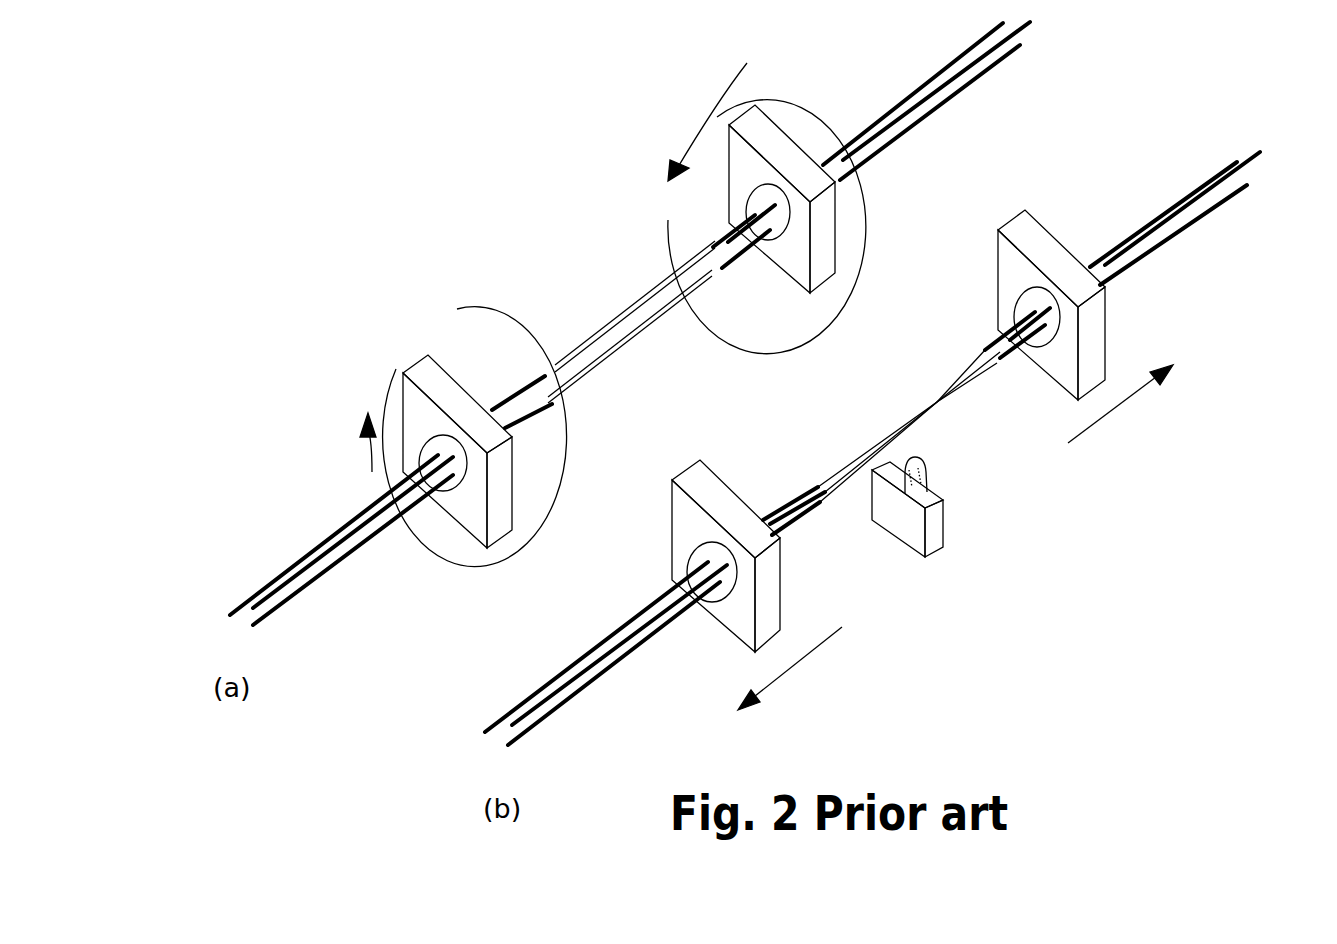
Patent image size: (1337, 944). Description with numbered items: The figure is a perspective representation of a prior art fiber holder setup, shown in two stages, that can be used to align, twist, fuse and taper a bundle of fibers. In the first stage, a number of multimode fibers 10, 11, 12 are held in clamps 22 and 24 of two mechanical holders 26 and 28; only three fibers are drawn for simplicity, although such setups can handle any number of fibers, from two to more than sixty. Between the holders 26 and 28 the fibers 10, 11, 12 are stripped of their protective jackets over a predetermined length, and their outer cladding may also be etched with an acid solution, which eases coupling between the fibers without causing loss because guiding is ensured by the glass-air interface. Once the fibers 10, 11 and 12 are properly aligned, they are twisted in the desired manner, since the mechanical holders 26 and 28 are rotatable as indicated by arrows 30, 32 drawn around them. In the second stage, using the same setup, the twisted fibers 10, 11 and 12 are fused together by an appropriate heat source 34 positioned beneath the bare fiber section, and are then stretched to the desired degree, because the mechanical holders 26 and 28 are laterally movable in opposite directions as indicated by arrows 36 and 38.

The multimode fiber 10 is at (611, 323).
The multimode fiber 11 is at (663, 315).
The multimode fiber 12 is at (593, 358).
The clamp 22 is at (408, 422).
The clamp 24 is at (760, 198).
The mechanical holder 26 is at (450, 398).
The mechanical holder 28 is at (797, 262).
The arrow 30 is at (372, 472).
The arrow 32 is at (767, 193).
The heat source 34 is at (933, 523).
The arrow 36 is at (795, 665).
The arrow 38 is at (1120, 403).